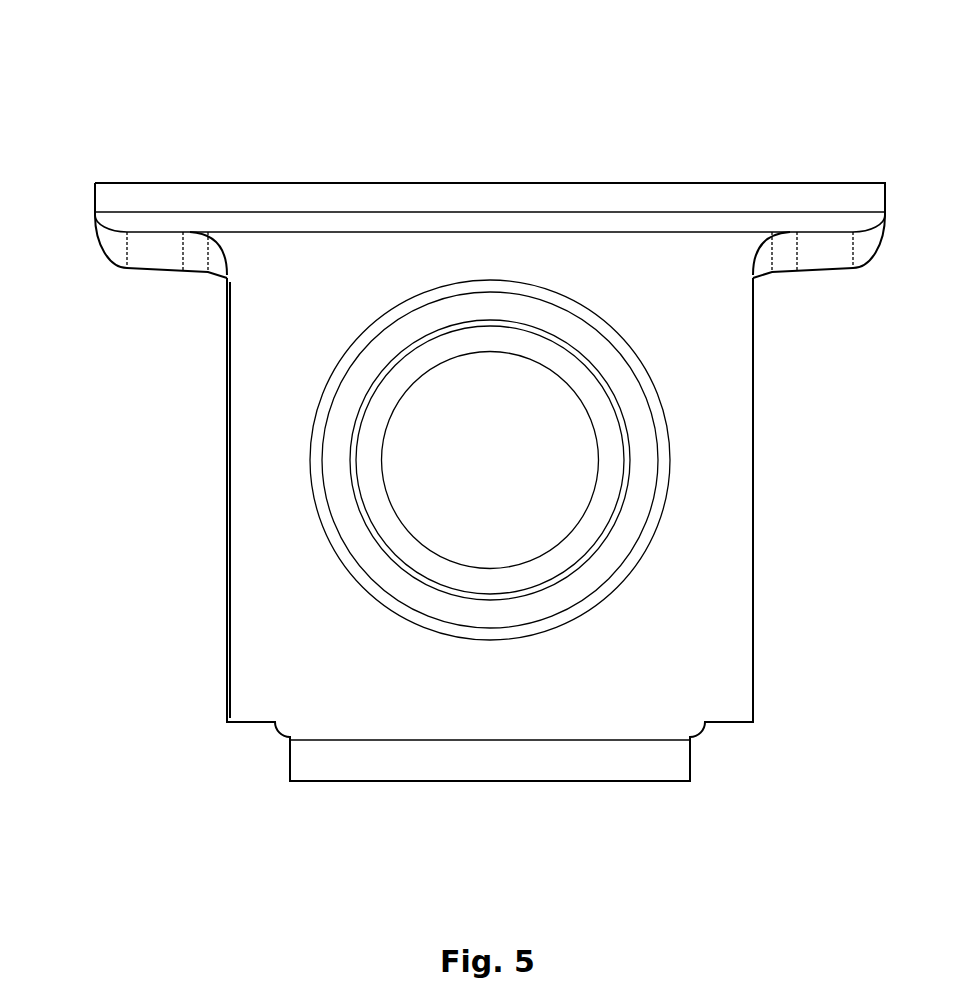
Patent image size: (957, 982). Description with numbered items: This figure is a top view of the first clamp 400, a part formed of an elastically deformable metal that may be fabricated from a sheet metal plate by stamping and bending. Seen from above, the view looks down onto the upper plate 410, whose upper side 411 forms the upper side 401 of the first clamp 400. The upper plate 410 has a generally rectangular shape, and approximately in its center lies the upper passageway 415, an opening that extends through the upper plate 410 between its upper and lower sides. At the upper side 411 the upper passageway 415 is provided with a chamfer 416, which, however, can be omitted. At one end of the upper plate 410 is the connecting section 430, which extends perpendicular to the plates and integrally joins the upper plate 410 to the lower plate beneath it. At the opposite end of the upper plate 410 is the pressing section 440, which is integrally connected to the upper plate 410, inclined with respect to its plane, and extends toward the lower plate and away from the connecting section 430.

The first clamp 400 is at (138, 53).
The pressing section 440 is at (777, 192).
The upper side of the first clamp 401 is at (253, 637).
The upper plate 410 is at (753, 428).
The upper side of the upper plate 411 is at (727, 500).
The connecting section 430 is at (613, 769).
The chamfer 416 is at (348, 408).
The upper passageway 415 is at (415, 438).